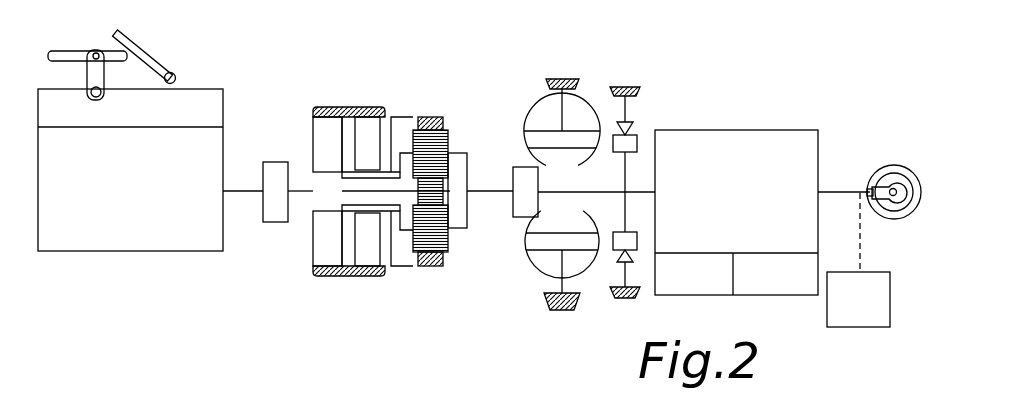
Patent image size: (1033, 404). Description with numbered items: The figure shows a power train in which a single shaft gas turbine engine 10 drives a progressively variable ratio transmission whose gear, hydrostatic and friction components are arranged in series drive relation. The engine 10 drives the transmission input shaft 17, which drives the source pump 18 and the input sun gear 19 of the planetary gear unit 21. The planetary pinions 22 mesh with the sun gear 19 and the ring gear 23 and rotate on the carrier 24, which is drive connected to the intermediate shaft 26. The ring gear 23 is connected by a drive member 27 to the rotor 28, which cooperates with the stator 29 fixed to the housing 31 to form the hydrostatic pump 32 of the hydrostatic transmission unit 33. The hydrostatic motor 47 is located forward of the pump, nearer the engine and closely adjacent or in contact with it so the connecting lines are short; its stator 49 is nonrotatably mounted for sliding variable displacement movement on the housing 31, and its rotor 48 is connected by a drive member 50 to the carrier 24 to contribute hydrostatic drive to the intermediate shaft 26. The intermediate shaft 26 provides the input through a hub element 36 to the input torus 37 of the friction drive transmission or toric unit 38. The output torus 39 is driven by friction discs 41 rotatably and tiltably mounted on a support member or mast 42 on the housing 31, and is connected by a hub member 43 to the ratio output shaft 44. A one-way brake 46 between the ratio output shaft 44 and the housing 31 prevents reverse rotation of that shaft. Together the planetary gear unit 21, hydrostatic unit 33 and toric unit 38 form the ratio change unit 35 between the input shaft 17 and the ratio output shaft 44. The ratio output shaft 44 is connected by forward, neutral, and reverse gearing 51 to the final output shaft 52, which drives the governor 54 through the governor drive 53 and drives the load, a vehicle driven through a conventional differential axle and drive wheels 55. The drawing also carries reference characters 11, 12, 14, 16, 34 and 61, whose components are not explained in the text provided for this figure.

The engine 10 is at (153, 235).
The fuel control 11 is at (185, 97).
The fuel control lever 12 is at (129, 42).
The control rod 14 is at (77, 52).
The link 16 is at (92, 80).
The transmission input shaft 17 is at (242, 193).
The source pump 18 is at (275, 210).
The input sun gear 19 is at (443, 198).
The planetary gear unit 21 is at (458, 115).
The planetary pinions 22 is at (452, 140).
The ring gear 23 is at (455, 110).
The carrier 24 is at (458, 155).
The intermediate shaft 26 is at (485, 191).
The drive member 27 is at (437, 118).
The rotor 28 is at (389, 117).
The stator 29 is at (363, 127).
The housing 31 is at (370, 107).
The hydrostatic pump 32 is at (374, 98).
The hydrostatic transmission unit 33 is at (390, 88).
The gear train 34 is at (415, 277).
The ratio change unit 35 is at (450, 63).
The hub element 36 is at (515, 182).
The input torus 37 is at (532, 115).
The friction drive transmission or toric unit 38 is at (578, 73).
The output torus 39 is at (583, 116).
The friction discs 41 is at (543, 137).
The support member or mast 42 is at (555, 110).
The hub member 43 is at (623, 153).
The ratio output shaft 44 is at (592, 194).
The one-way brake 46 is at (637, 137).
The hydrostatic motor 47 is at (280, 87).
The rotor 48 is at (323, 168).
The stator 49 is at (320, 131).
The drive member 50 is at (356, 183).
The forward, neutral, and reverse gearing 51 is at (738, 138).
The final output shaft 52 is at (832, 190).
The governor drive 53 is at (860, 228).
The governor 54 is at (863, 317).
The drive wheels 55 is at (888, 167).
The clutch drum lower portion 61 is at (332, 277).